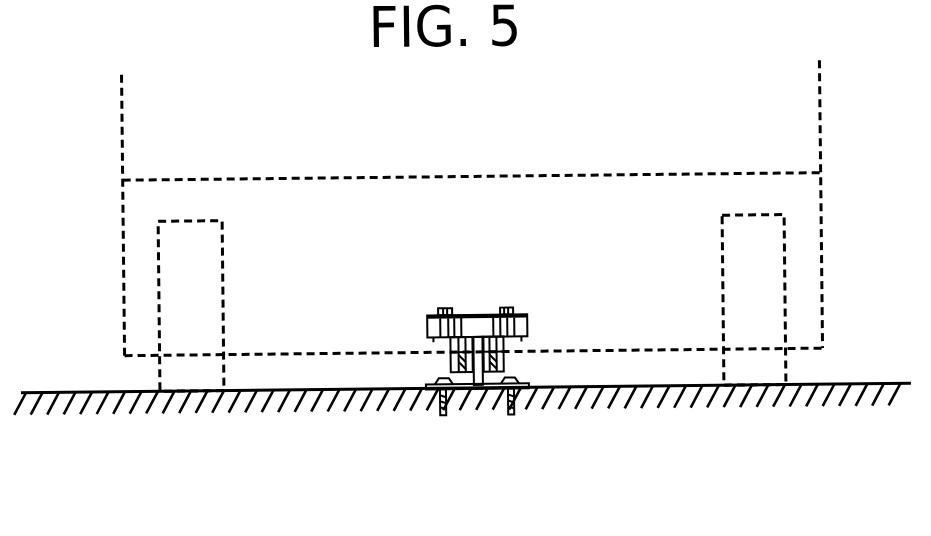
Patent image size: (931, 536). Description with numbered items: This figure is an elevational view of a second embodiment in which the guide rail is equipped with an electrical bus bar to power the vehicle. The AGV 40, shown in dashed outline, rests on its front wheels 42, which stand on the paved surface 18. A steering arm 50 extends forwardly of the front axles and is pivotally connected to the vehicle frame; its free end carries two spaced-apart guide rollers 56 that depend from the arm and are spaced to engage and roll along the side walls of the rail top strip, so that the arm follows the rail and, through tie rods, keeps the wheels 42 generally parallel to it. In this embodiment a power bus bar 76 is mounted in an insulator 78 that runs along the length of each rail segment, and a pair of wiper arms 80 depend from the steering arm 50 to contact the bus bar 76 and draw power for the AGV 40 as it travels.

The paved surface 18 is at (153, 389).
The AGV 40 is at (587, 191).
The front wheels 42 is at (207, 293).
The steering arm 50 is at (456, 313).
The guide rollers 56 is at (429, 328).
The power bus bar 76 is at (465, 362).
The insulator 78 is at (485, 388).
The wiper arms 80 is at (503, 361).